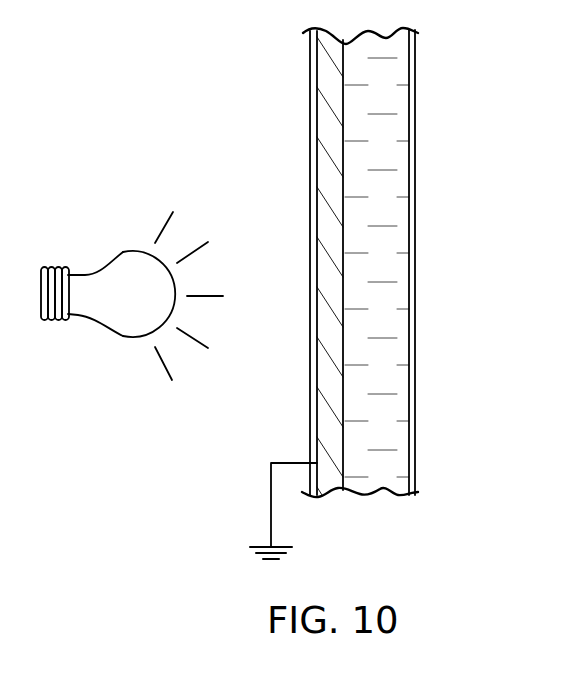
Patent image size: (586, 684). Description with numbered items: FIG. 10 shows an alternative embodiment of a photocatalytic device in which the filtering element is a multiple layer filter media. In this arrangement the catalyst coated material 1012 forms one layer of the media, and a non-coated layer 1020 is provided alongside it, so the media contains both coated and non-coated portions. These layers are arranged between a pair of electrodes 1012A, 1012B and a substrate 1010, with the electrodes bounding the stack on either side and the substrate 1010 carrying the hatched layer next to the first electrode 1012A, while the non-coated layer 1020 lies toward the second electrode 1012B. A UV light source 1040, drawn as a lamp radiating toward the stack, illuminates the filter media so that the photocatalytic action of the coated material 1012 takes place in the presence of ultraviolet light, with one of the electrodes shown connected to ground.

The electrode 1012A is at (313, 70).
The electrode 1012B is at (412, 57).
The catalyst coated material 1012 is at (307, 277).
The substrate 1010 is at (336, 137).
The non-coated layer 1020 is at (400, 135).
The UV light source 1040 is at (67, 318).